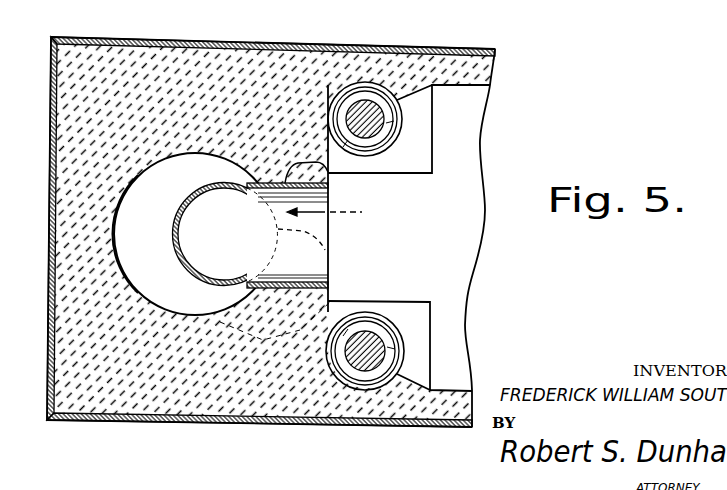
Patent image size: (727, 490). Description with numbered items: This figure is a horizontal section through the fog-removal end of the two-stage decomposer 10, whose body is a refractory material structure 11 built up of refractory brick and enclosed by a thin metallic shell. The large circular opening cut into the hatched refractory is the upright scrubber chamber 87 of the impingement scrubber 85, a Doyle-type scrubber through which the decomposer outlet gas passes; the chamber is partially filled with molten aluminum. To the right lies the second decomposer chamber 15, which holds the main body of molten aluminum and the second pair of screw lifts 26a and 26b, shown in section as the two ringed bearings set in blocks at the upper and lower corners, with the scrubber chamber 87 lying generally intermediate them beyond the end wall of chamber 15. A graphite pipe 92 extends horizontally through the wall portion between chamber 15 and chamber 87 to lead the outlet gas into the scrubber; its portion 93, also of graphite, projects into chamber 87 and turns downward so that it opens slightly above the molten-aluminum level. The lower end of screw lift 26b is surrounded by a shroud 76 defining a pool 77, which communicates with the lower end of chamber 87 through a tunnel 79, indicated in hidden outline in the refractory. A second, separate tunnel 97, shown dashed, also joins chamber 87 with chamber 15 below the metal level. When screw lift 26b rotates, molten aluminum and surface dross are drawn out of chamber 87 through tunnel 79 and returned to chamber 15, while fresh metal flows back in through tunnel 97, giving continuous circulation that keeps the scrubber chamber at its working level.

The two-stage decomposer 10 is at (306, 43).
The refractory material structure 11 is at (172, 60).
The second enclosed chamber 15 is at (418, 227).
The screw lift 26a is at (373, 117).
The screw lift 26b is at (372, 340).
The shroud 76 is at (412, 301).
The pool 77 is at (385, 313).
The tunnel 79 is at (265, 340).
The impingement scrubber 85 is at (192, 168).
The scrubber chamber 87 is at (118, 205).
The pipe 92 is at (339, 167).
The pipe portion 93 is at (176, 245).
The second tunnel 97 is at (325, 250).